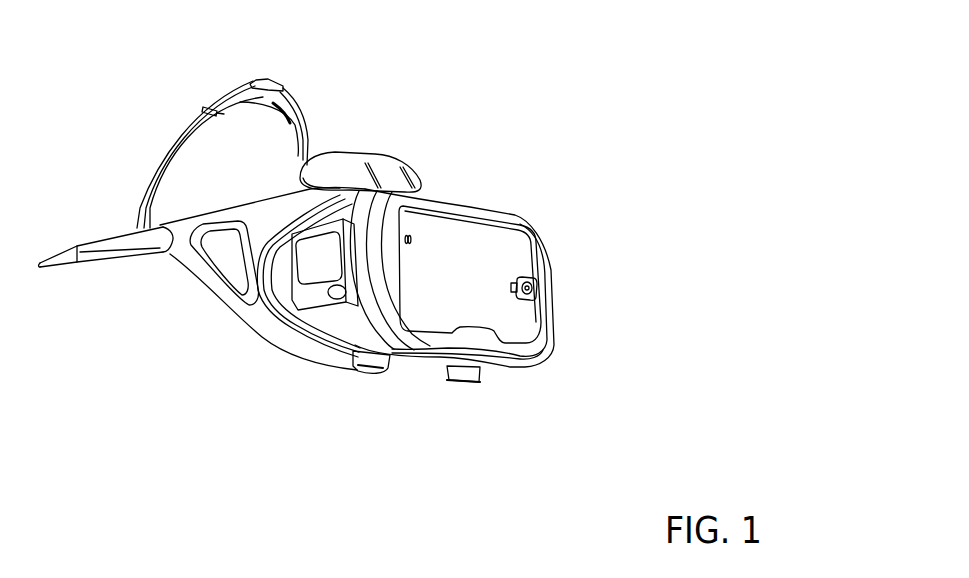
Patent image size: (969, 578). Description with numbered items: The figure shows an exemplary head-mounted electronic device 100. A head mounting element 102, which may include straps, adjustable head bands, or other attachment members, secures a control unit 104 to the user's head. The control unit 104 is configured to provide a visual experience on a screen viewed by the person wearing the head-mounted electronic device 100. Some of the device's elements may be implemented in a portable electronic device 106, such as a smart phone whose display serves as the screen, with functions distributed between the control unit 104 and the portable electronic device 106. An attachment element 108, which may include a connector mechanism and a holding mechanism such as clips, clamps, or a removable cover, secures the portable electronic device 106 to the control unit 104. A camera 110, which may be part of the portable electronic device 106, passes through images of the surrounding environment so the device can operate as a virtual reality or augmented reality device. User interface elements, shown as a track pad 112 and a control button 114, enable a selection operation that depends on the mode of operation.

The head-mounted electronic device 100 is at (569, 96).
The head mounting element 102 is at (149, 254).
The control unit 104 is at (347, 324).
The portable electronic device 106 is at (498, 249).
The attachment element 108 is at (443, 202).
The camera 110 is at (536, 281).
The track pad 112 is at (308, 253).
The control button 114 is at (331, 292).